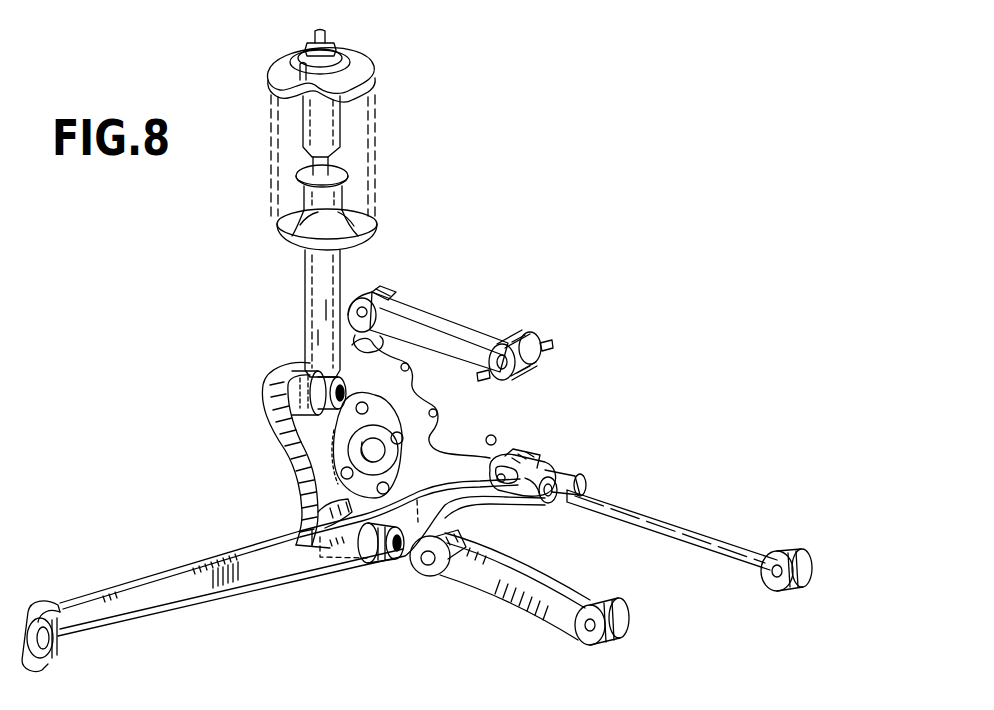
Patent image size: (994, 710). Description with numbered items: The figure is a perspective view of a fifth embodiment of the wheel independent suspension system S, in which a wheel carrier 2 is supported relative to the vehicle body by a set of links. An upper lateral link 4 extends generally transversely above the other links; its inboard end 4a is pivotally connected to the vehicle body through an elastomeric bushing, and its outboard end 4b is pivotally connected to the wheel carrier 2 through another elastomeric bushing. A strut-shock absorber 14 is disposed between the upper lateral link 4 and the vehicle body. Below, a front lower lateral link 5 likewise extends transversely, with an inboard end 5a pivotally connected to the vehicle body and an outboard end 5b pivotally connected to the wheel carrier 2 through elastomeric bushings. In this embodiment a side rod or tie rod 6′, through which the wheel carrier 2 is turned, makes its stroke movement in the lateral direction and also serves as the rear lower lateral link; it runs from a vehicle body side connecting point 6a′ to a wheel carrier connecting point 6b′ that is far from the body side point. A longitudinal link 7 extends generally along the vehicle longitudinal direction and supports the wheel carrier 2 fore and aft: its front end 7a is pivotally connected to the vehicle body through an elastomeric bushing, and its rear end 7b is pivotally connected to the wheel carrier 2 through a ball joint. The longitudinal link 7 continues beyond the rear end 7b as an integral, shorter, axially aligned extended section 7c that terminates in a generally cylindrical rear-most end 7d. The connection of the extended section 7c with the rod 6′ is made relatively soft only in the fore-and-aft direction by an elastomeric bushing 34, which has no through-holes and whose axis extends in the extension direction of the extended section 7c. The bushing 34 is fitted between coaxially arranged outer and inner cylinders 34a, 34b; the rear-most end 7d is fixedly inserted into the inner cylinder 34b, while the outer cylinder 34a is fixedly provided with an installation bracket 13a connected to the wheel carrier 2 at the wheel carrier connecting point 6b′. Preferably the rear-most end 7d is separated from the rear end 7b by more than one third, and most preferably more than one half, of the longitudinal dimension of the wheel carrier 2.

The wheel independent suspension system S is at (628, 310).
The strut-shock absorber 14 is at (303, 300).
The wheel carrier 2 is at (263, 405).
The upper lateral link 4 is at (455, 322).
The outboard end of upper lateral link 4b is at (380, 292).
The inboard end of upper lateral link 4a is at (522, 375).
The wheel carrier connecting point 6b′ is at (510, 456).
The installation bracket 13a is at (548, 460).
The inner cylinder 34b is at (572, 475).
The outer cylinder 34a is at (580, 487).
The elastomeric bushing 34 is at (548, 500).
The longitudinal link 7 is at (193, 562).
The front end of longitudinal link 7a is at (45, 645).
The rear end of longitudinal link 7b is at (370, 555).
The extended section 7c is at (477, 508).
The rear-most end 7d is at (540, 502).
The side rod or tie rod 6′ is at (680, 525).
The vehicle body side connecting point 6a′ is at (794, 584).
The front lower lateral link 5 is at (500, 612).
The outboard end of front lower lateral link 5b is at (443, 570).
The inboard end of front lower lateral link 5a is at (626, 605).